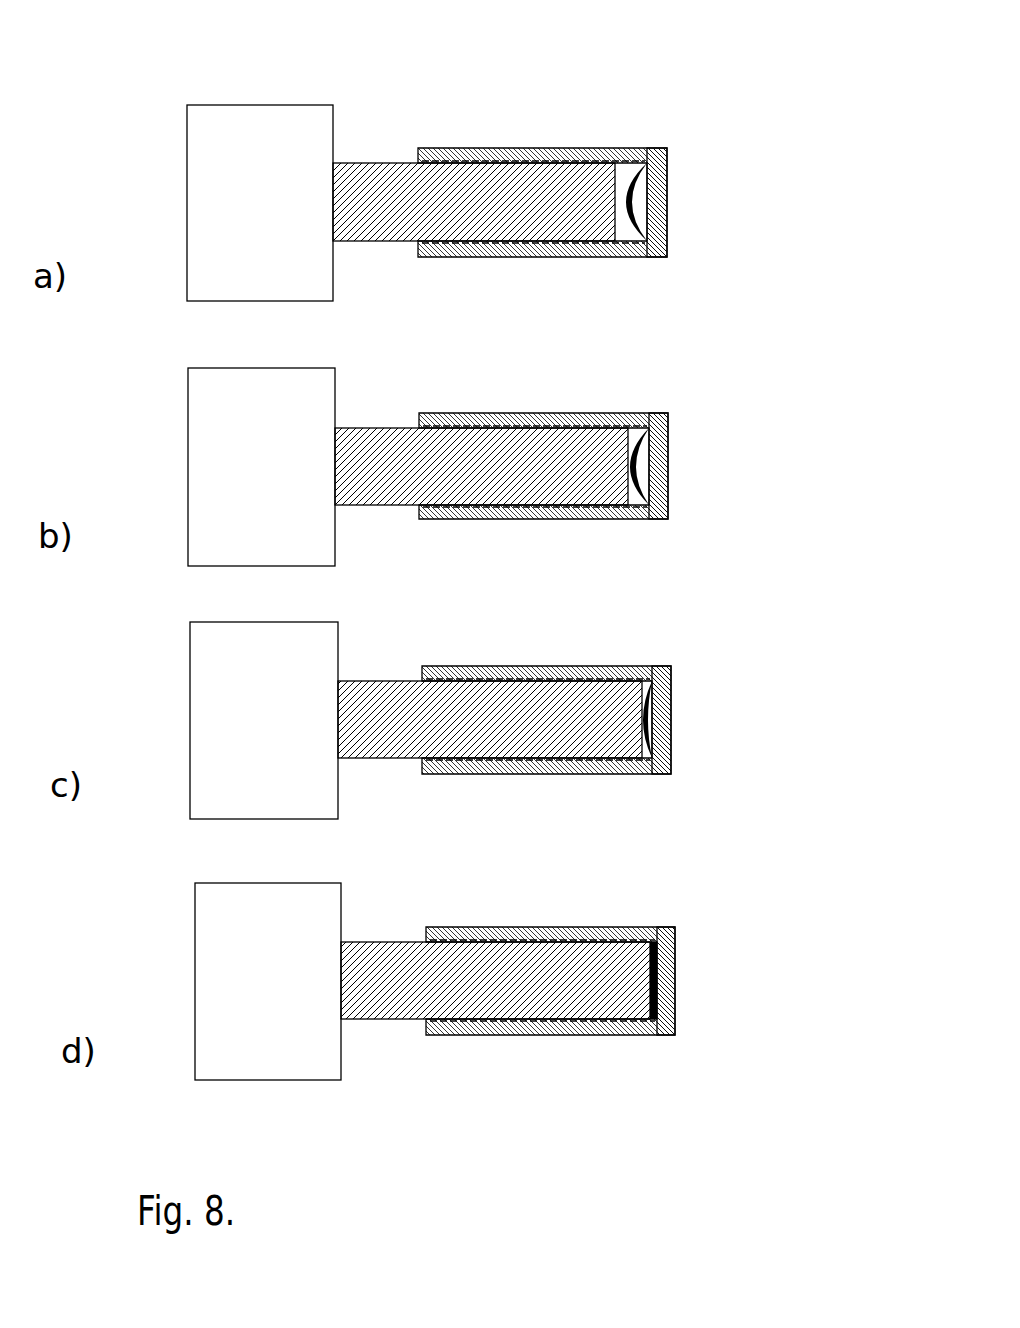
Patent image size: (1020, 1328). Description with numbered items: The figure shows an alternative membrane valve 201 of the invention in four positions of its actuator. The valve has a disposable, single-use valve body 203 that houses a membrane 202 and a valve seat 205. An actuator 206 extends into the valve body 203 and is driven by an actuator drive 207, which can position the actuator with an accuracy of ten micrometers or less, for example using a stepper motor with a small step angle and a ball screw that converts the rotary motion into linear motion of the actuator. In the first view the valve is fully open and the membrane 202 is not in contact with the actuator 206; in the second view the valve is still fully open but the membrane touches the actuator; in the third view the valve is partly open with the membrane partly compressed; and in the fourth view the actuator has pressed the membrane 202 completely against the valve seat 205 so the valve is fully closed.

The membrane valve 201 is at (772, 200).
The membrane 202 is at (630, 200).
The valve body 203 is at (615, 160).
The valve seat 205 is at (648, 207).
The actuator 206 is at (388, 190).
The actuator drive 207 is at (268, 152).